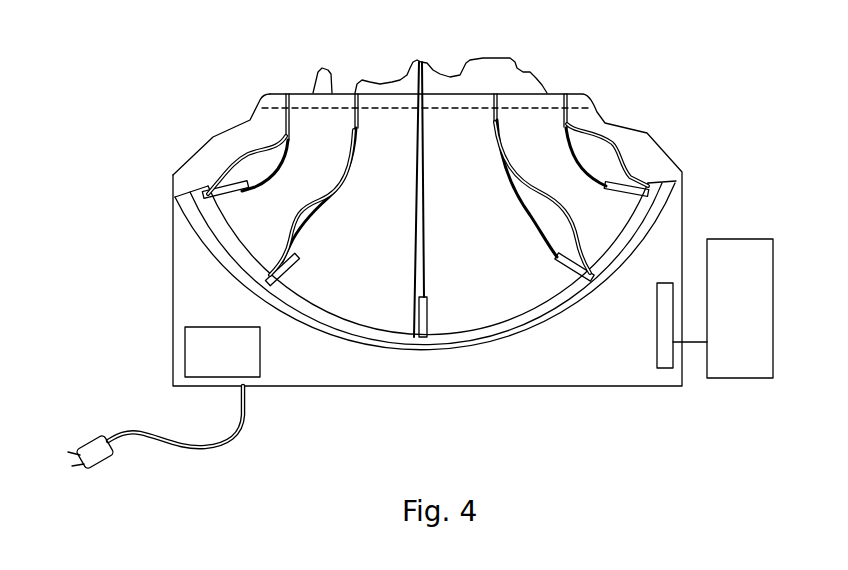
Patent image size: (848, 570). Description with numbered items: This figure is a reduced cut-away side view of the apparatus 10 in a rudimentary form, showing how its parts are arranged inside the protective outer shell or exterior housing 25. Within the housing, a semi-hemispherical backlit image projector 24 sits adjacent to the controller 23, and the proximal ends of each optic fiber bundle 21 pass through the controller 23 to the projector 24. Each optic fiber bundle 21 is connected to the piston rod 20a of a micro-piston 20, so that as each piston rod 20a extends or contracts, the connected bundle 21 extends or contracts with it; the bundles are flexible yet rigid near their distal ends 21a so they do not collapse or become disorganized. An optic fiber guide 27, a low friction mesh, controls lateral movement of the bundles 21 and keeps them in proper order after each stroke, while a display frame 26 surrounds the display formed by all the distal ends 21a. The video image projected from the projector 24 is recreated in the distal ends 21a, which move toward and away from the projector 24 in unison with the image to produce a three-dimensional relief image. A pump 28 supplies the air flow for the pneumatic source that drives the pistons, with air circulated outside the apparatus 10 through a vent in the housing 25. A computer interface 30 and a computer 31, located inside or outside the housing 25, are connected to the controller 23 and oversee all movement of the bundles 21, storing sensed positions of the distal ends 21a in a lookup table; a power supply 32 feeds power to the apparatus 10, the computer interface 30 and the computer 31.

The apparatus 10 is at (148, 141).
The micro-piston 20 is at (570, 262).
The piston rod 20a is at (513, 182).
The optic fiber bundle 21 is at (550, 207).
The distal ends 21a is at (563, 95).
The controller 23 is at (362, 342).
The semi-hemispherical backlit image projector 24 is at (557, 335).
The exterior housing 25 is at (173, 257).
The display frame 26 is at (250, 117).
The optic fiber guide 27 is at (317, 108).
The pump 28 is at (185, 358).
The computer interface 30 is at (662, 368).
The computer 31 is at (735, 378).
The power supply 32 is at (147, 433).